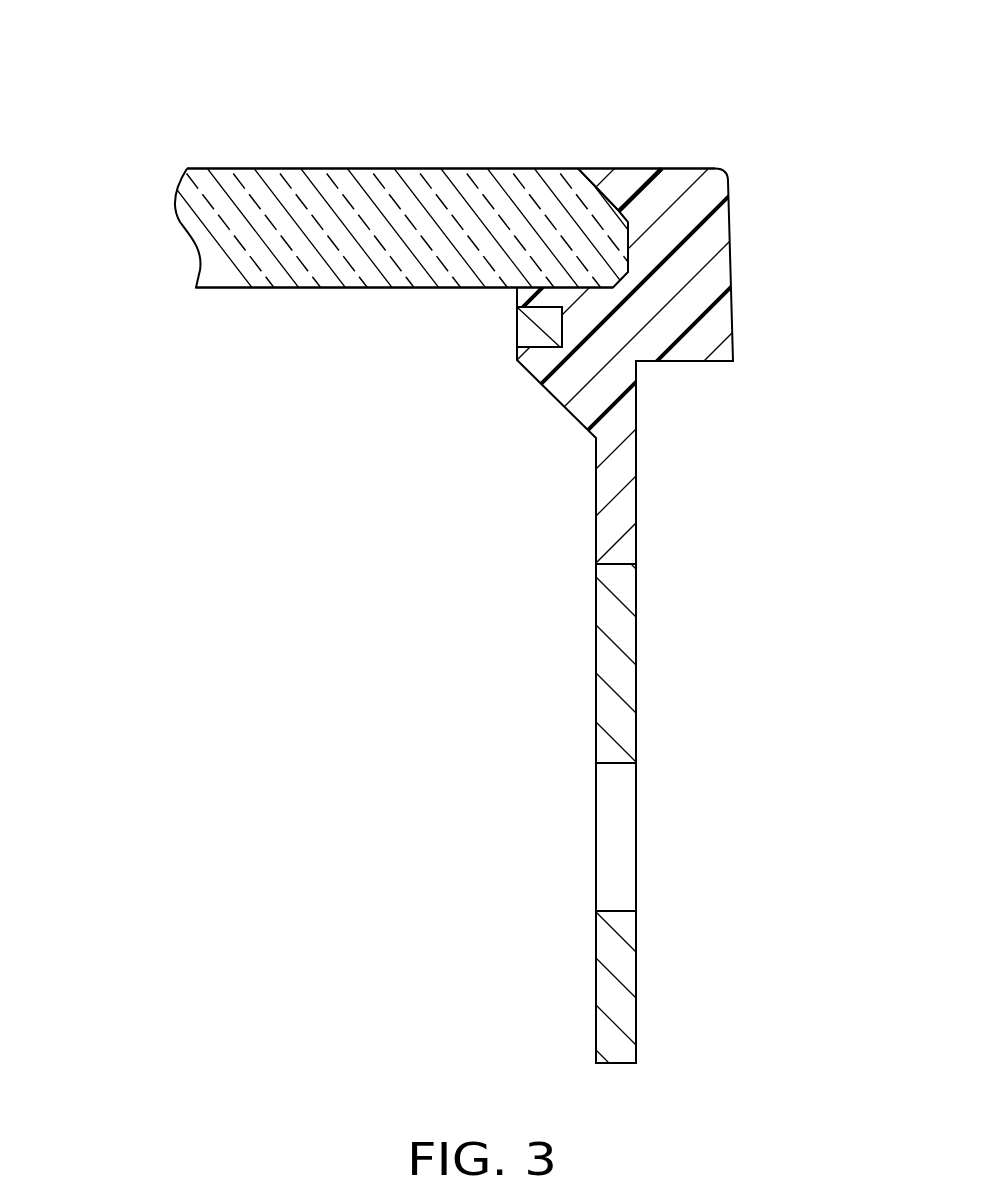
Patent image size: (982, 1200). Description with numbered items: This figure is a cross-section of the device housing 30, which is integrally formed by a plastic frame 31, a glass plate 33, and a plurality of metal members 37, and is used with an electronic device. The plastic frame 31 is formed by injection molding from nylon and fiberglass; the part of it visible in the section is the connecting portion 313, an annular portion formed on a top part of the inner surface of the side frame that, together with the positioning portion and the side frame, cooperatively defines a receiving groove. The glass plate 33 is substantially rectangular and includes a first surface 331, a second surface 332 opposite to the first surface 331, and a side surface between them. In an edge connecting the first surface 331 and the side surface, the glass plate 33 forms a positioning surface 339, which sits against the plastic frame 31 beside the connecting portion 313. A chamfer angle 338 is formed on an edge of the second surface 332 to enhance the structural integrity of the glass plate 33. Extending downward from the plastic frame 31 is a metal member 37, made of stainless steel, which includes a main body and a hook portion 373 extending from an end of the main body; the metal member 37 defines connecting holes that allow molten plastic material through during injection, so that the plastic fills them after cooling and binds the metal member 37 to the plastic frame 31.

The device housing 30 is at (361, 68).
The plastic frame 31 is at (491, 601).
The connecting portion 313 is at (613, 188).
The glass plate 33 is at (228, 218).
The first surface 331 is at (234, 153).
The second surface 332 is at (256, 302).
The chamfer angle 338 is at (628, 290).
The positioning surface 339 is at (627, 203).
The metal member 37 is at (618, 724).
The hook portion 373 is at (527, 333).